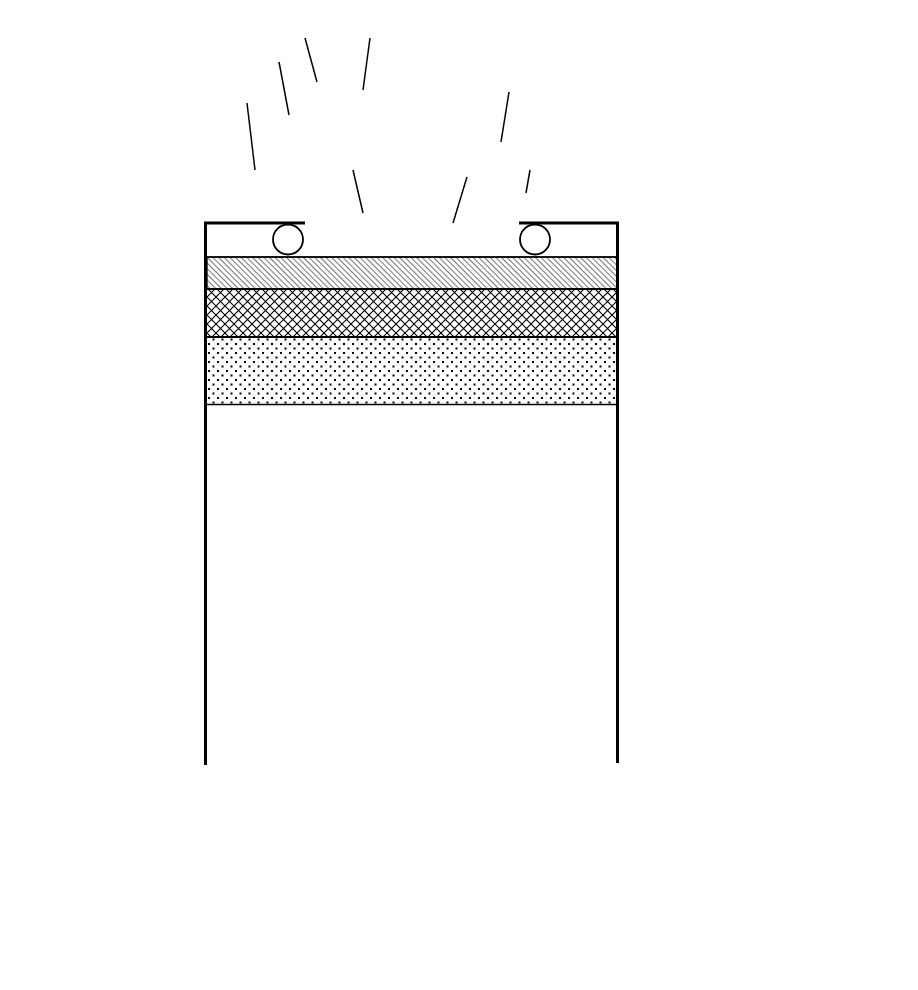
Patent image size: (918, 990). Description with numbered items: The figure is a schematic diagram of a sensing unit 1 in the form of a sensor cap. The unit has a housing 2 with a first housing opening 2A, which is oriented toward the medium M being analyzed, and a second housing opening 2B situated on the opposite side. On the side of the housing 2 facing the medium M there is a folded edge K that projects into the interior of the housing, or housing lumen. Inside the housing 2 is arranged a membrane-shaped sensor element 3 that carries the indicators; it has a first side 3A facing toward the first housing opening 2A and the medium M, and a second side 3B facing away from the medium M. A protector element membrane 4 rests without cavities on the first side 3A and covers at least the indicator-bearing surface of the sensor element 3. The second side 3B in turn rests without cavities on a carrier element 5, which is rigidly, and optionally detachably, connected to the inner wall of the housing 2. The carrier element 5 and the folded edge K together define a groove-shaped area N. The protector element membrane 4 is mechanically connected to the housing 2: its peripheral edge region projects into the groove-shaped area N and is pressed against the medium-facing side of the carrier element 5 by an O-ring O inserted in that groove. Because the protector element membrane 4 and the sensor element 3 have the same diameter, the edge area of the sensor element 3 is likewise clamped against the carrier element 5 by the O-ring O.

The sensing unit 1 is at (176, 702).
The housing 2 is at (205, 578).
The first housing opening 2A is at (470, 227).
The second housing opening 2B is at (509, 753).
The sensor element 3 is at (217, 315).
The first side of sensor element 3A is at (597, 293).
The second side of sensor element 3B is at (597, 342).
The protector element membrane 4 is at (217, 270).
The carrier element 5 is at (220, 380).
The O-ring O is at (273, 230).
The folded edge K is at (586, 223).
The groove-shaped area N is at (607, 252).
The medium M is at (405, 142).